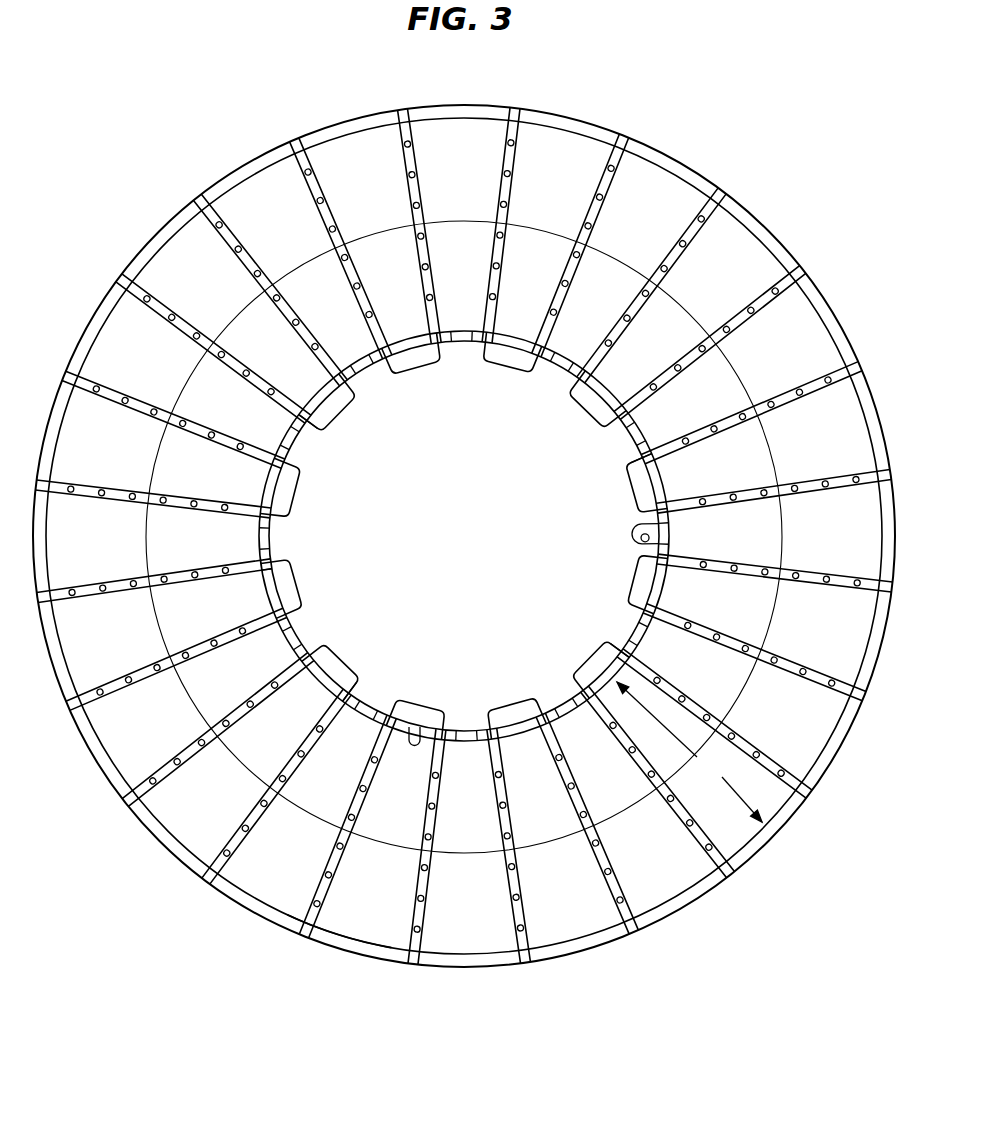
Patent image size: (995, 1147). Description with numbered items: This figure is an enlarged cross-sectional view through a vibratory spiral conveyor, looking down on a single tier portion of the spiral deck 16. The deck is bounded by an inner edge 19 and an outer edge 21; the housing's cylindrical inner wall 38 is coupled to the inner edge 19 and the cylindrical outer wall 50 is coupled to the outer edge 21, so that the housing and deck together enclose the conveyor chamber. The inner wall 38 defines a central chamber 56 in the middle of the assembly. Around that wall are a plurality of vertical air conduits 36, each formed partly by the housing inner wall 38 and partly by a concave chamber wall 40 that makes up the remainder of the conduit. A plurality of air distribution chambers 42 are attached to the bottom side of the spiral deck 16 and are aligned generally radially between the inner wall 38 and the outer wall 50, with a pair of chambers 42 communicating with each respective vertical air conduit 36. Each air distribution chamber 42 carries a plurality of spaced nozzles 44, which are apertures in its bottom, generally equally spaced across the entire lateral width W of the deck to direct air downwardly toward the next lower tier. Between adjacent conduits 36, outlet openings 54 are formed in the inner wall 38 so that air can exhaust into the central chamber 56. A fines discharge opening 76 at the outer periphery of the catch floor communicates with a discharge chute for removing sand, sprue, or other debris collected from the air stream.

The spiral deck 16 is at (578, 168).
The cylindrical outer wall 50 is at (767, 231).
The outlet openings 54 is at (350, 360).
The concave chamber walls 40 is at (350, 405).
The vertical air conduits 36 is at (328, 417).
The cylindrical inner wall 38 is at (267, 485).
The fines discharge opening 76 is at (642, 540).
The central chamber 56 is at (415, 551).
The spaced nozzles 44 is at (762, 490).
The air distribution chambers 42 is at (578, 790).
The inner edge 19 is at (416, 746).
The outer edge 21 is at (340, 928).
The lateral width W is at (689, 752).